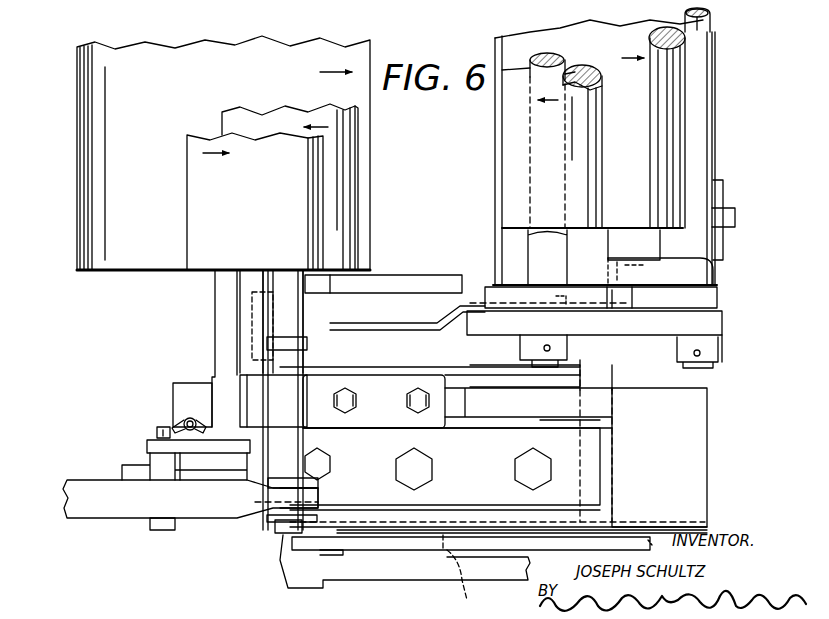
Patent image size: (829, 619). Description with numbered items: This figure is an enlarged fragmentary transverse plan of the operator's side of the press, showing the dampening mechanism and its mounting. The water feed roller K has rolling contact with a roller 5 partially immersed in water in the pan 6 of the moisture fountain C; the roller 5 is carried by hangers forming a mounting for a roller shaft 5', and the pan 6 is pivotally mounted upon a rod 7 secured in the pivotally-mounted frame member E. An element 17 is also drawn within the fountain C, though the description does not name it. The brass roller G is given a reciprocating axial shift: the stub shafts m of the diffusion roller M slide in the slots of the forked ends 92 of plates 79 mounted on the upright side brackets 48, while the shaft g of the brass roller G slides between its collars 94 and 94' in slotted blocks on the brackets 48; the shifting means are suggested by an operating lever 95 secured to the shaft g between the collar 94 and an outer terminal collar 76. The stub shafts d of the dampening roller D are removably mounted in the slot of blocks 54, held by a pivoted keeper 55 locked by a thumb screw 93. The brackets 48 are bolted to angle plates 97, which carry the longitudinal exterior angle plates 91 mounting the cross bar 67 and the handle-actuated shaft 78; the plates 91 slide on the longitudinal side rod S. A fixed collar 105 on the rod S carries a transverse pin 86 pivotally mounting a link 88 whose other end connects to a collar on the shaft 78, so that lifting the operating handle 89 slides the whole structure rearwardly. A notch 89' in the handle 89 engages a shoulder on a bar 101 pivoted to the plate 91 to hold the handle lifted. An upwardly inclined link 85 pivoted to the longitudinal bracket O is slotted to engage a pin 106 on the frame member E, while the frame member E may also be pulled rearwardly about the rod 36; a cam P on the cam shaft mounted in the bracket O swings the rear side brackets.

The dampening roller D is at (370, 152).
The brass roller G is at (358, 200).
The diffusion roller M is at (187, 258).
The moisture fountain C is at (712, 150).
The water feed roller K is at (506, 184).
The water pan 6 is at (715, 124).
The rod 36 is at (706, 16).
The cylinder 17 is at (538, 60).
The roller 5 is at (649, 127).
The cam P is at (735, 216).
The roller shaft 5' is at (640, 257).
The rod 7 is at (627, 299).
The longitudinal bracket O is at (710, 301).
The pin 106 is at (562, 299).
The frame member E is at (722, 323).
The cross bar 67 is at (614, 378).
The handle-actuated shaft 78 is at (332, 284).
The inclined link 85 is at (412, 330).
The collar 94' is at (317, 328).
The stub shaft d is at (217, 322).
The stub shaft m is at (240, 357).
The forked end 92 is at (255, 392).
The block 54 is at (212, 382).
The thumb screw 93 is at (184, 424).
The pivoted keeper 55 is at (170, 430).
The transverse pin 86 is at (157, 440).
The link 88 is at (225, 447).
The longitudinal side rod S is at (123, 470).
The fixed collar 105 is at (163, 530).
The operating lever 95 is at (237, 515).
The terminal collar 76 is at (273, 527).
The collar 94 is at (312, 485).
The shaft g is at (298, 452).
The plate 79 is at (372, 385).
The upright side bracket 48 is at (450, 390).
The angle plate 97 is at (538, 426).
The exterior angle plate 91 is at (700, 430).
The bar 101 is at (545, 543).
The operating handle 89 is at (405, 573).
The notch 89' is at (468, 574).